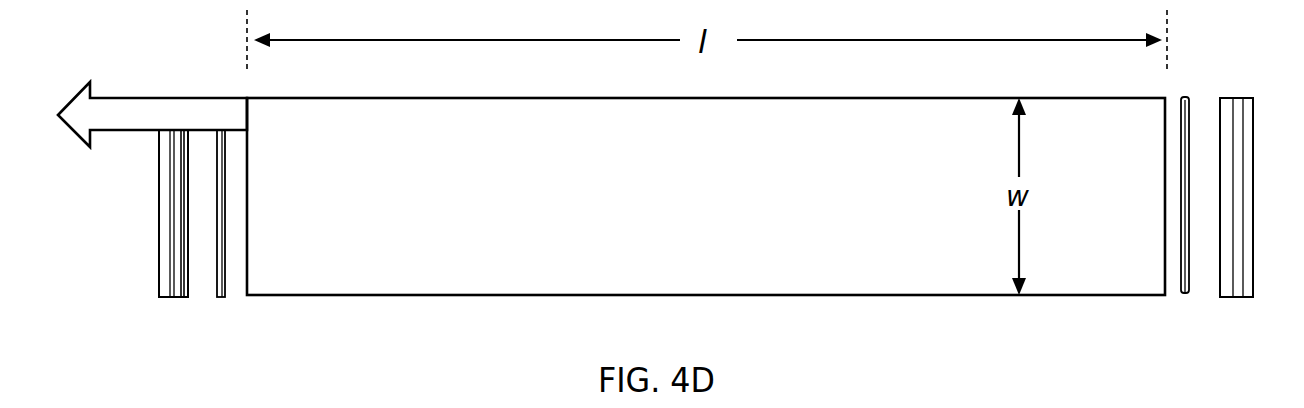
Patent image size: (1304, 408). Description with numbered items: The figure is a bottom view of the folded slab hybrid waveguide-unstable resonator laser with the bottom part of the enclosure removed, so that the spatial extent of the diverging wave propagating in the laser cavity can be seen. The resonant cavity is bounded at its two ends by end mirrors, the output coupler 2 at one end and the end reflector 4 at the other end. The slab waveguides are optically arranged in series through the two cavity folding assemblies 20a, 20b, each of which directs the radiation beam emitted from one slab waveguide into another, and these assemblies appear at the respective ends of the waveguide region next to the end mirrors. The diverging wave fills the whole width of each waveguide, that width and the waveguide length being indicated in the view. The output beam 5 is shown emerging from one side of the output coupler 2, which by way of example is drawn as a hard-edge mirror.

The output beam 5 is at (130, 96).
The output coupler 2 is at (213, 157).
The end reflector 4 is at (1189, 126).
The cavity folding assembly 20a is at (1223, 300).
The cavity folding assembly 20b is at (150, 198).